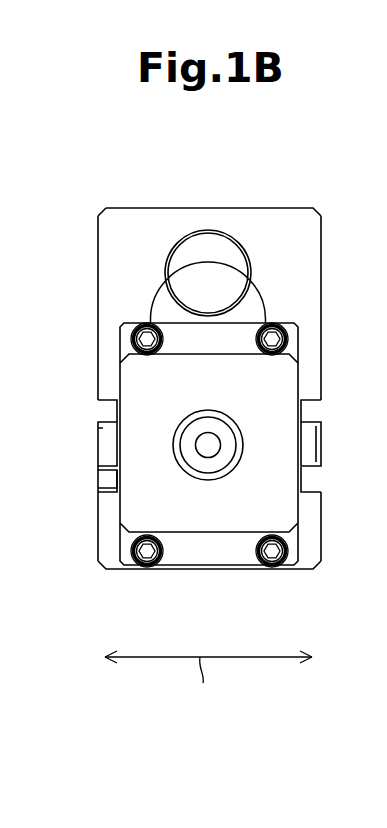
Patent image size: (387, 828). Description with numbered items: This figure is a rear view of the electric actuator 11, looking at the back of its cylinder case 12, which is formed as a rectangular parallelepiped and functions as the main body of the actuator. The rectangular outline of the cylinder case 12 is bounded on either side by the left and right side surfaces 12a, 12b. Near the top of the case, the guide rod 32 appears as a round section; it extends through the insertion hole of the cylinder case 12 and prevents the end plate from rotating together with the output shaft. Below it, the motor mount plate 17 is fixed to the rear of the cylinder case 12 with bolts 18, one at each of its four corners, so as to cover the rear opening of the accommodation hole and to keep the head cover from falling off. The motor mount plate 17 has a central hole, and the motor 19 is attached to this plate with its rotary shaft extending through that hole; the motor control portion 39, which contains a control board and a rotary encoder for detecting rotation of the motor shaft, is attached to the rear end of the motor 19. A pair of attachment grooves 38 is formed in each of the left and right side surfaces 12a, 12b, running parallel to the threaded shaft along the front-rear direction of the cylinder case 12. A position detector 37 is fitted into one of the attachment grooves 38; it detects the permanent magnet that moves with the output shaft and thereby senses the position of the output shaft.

The electric actuator 11 is at (288, 186).
The cylinder case 12 is at (122, 206).
The left side surface 12a is at (98, 270).
The right side surface 12b is at (321, 283).
The guide rod 32 is at (193, 248).
The bolts 18 is at (131, 336).
The motor mount plate 17 is at (200, 555).
The motor 19 is at (243, 456).
The motor control portion 39 is at (290, 506).
The attachment grooves 38 is at (103, 425).
The position detector 37 is at (98, 483).